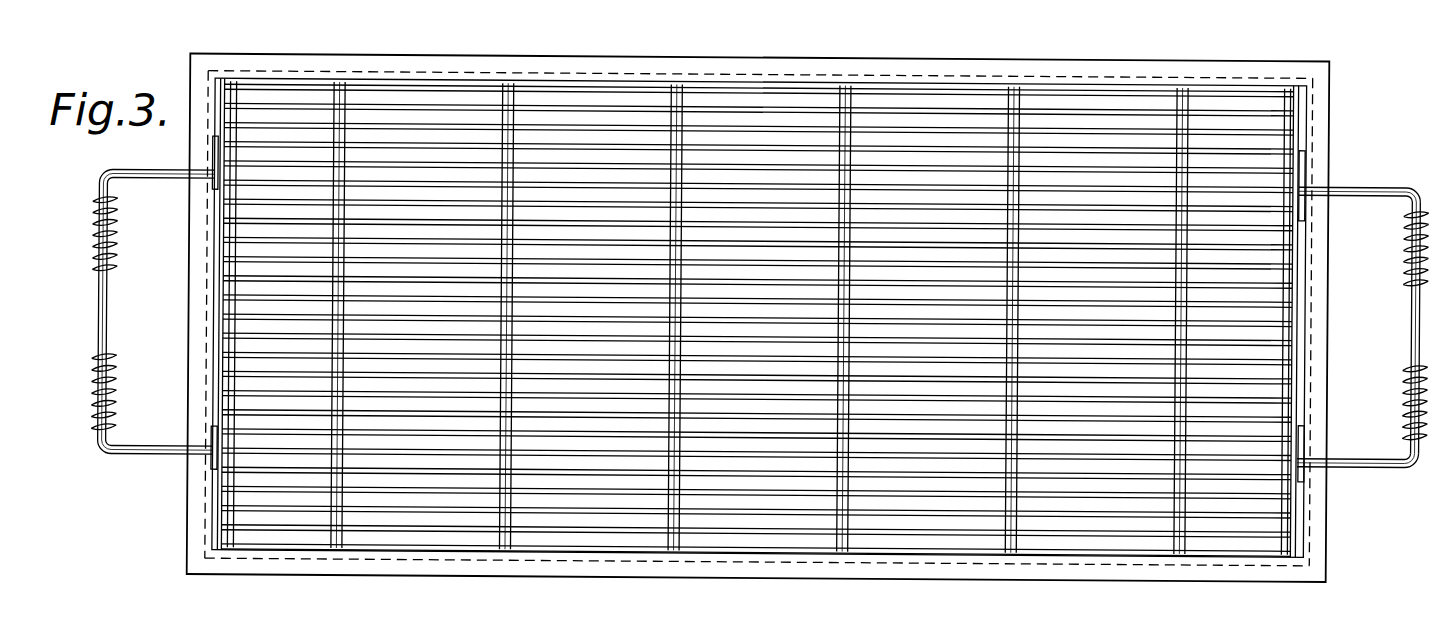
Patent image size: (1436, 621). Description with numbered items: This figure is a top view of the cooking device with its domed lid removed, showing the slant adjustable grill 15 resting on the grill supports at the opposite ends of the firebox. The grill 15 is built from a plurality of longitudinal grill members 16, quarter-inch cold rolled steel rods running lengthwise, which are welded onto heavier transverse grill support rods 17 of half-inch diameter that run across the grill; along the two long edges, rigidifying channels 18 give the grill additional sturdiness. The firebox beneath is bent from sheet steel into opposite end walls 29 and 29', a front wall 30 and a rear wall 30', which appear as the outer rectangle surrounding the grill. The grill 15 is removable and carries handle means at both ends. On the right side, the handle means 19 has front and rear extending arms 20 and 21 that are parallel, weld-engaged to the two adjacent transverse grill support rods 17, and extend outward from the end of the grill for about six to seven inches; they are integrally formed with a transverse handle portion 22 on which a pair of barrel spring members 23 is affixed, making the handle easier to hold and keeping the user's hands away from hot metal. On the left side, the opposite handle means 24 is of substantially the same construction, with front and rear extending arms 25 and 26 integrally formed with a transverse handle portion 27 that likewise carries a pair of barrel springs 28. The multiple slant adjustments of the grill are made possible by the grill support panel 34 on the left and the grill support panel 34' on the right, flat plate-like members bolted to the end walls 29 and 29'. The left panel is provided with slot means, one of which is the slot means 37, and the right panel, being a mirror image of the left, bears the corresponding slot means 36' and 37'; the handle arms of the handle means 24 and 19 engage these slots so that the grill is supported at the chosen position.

The slant adjustable grill 15 is at (951, 563).
The longitudinal grill members 16 is at (906, 150).
The transverse grill support rods 17 is at (331, 100).
The rigidifying channels 18 is at (662, 84).
The handle means 19 is at (1365, 372).
The front extending arm 20 is at (1361, 180).
The rear extending arm 21 is at (1362, 462).
The transverse handle portion 22 is at (1411, 308).
The barrel spring members 23 is at (1405, 268).
The opposite handle means 24 is at (170, 374).
The front extending arm 25 is at (154, 175).
The rear extending arm 26 is at (141, 462).
The transverse handle portion 27 is at (98, 328).
The barrel springs 28 is at (93, 233).
The end wall 29 is at (167, 314).
The end wall 29' is at (1356, 320).
The front wall 30 is at (756, 589).
The rear wall 30' is at (760, 48).
The grill support panel 34 is at (179, 314).
The grill support panel 34' is at (1339, 322).
The slot means 36' is at (1343, 442).
The slot means 37 is at (179, 187).
The slot means 37' is at (1340, 191).